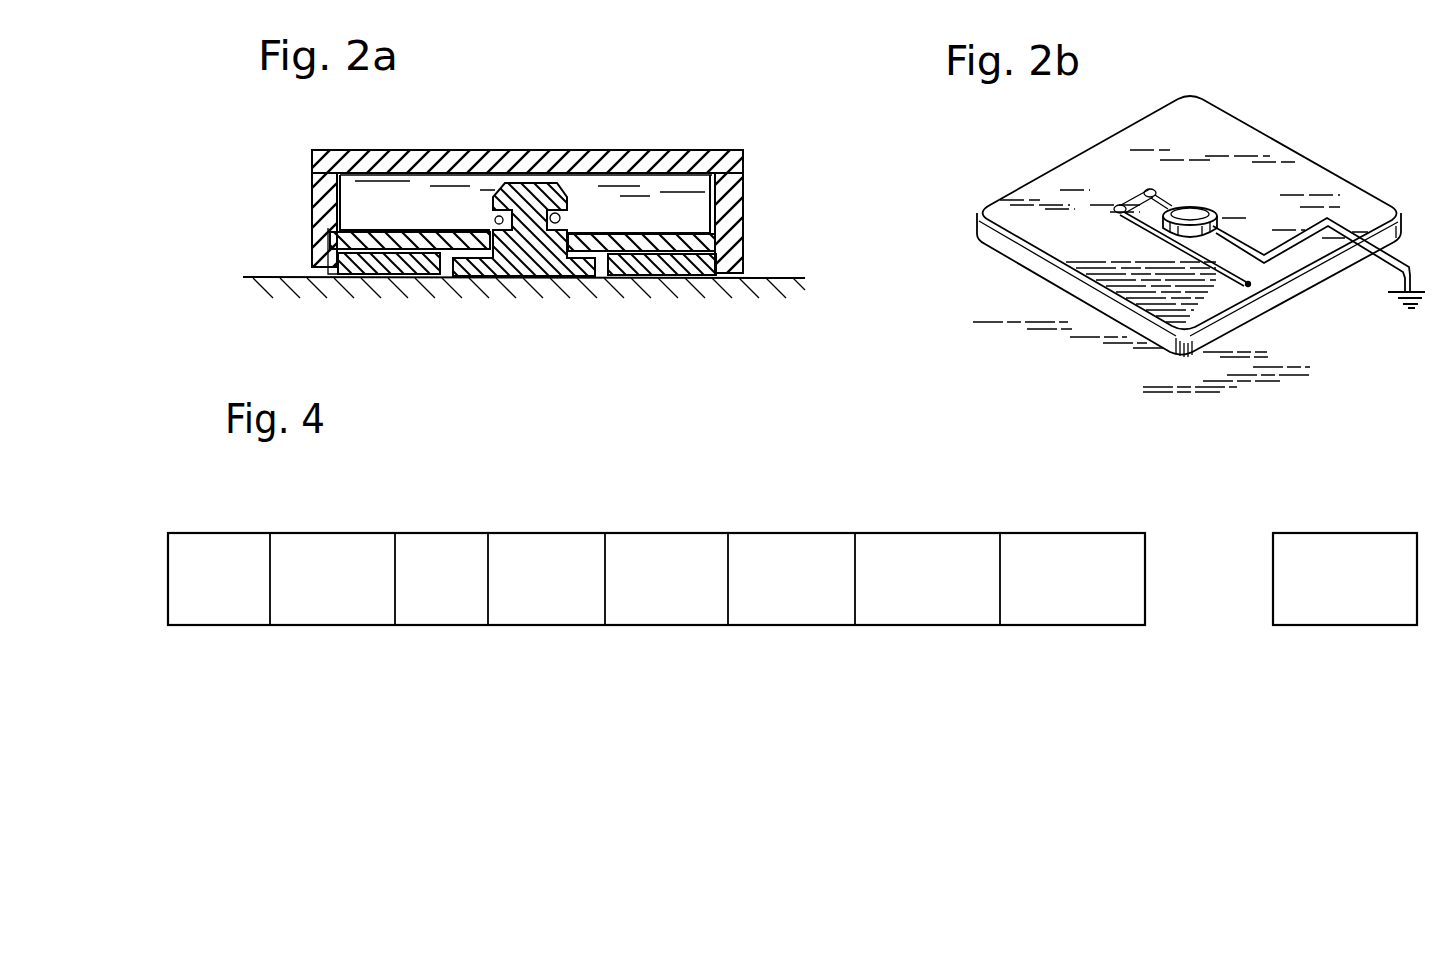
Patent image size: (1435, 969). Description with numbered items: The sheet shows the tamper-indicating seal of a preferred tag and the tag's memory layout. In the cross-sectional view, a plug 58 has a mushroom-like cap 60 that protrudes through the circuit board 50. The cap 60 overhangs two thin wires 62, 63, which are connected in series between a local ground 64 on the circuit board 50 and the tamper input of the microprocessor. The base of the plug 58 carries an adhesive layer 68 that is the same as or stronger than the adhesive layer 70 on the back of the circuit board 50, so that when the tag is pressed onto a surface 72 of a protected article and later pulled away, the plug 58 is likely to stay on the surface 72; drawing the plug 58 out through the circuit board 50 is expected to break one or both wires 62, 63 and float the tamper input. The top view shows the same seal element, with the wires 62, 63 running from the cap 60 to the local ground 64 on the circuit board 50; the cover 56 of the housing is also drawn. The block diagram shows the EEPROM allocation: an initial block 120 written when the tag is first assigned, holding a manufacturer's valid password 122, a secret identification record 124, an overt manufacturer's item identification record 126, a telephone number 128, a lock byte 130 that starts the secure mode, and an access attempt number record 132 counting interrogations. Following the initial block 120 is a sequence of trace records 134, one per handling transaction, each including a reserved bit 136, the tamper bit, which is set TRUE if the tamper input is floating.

In FIG. 2A, the circuit board 50 is at (716, 180).
In FIG. 2B, the circuit board 50 is at (1073, 188).
In FIG. 2A, the cover plate 56 is at (452, 155).
In FIG. 2A, the plug 58 is at (577, 190).
In FIG. 2A, the mushroom-like cap 60 is at (542, 187).
In FIG. 2B, the mushroom-like cap 60 is at (1193, 208).
In FIG. 2A, the thin wire 62 is at (496, 219).
In FIG. 2B, the thin wire 62 is at (1238, 226).
In FIG. 2A, the thin wire 63 is at (580, 200).
In FIG. 2B, the thin wire 63 is at (1207, 262).
In FIG. 2B, the local ground 64 is at (1327, 220).
In FIG. 2A, the adhesive layer 68 is at (535, 280).
In FIG. 2A, the adhesive layer 70 is at (427, 282).
In FIG. 2A, the surface 72 is at (293, 273).
In FIG. 2B, the surface 72 is at (1243, 382).
In FIG. 4, the initial block 120 is at (852, 522).
In FIG. 4, the manufacturer's valid password 122 is at (362, 624).
In FIG. 4, the secret identification record 124 is at (578, 622).
In FIG. 4, the overt manufacturer's item identification record 126 is at (700, 622).
In FIG. 4, the telephone number 128 is at (470, 620).
In FIG. 4, the lock byte 130 is at (257, 627).
In FIG. 4, the access attempt number record 132 is at (820, 620).
In FIG. 4, the trace record 134 is at (928, 532).
In FIG. 4, the reserved bit 136 is at (960, 617).